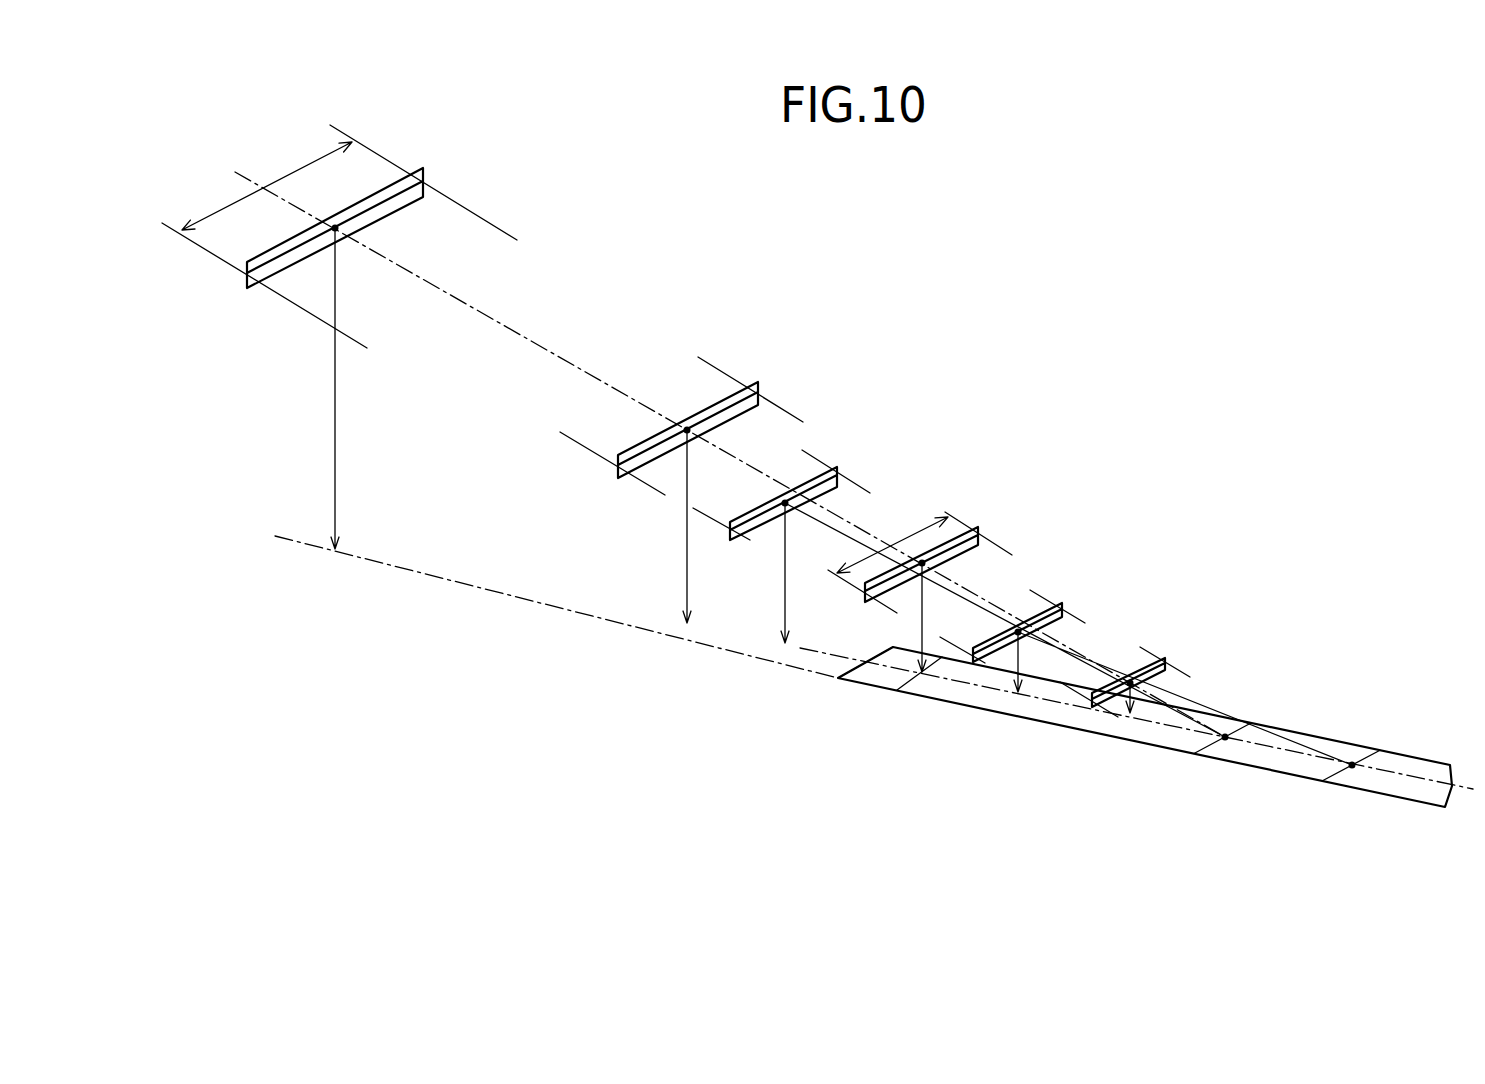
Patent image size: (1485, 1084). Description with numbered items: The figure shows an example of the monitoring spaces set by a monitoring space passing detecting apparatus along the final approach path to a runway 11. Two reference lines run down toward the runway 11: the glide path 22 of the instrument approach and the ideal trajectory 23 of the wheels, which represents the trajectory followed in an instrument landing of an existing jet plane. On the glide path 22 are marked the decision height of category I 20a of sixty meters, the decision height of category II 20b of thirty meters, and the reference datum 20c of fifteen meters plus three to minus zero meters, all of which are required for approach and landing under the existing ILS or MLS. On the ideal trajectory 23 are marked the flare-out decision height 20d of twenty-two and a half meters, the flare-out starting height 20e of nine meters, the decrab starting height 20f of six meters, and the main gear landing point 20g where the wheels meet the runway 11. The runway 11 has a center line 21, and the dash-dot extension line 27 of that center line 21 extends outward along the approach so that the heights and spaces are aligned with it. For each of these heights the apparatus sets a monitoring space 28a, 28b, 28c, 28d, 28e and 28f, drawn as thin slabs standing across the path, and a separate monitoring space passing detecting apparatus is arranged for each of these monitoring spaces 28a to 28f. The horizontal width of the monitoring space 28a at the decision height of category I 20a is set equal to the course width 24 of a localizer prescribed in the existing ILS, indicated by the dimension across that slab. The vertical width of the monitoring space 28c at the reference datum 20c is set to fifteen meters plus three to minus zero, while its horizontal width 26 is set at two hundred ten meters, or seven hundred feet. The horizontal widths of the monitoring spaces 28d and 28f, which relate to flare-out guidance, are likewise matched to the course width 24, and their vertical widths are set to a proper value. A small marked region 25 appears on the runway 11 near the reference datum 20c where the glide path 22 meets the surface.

The runway 11 is at (1068, 728).
The decision height of category I 20a is at (335, 385).
The decision height of category II 20b is at (687, 542).
The reference datum 20c is at (922, 628).
The flare-out decision height 20d is at (784, 582).
The flare-out starting height 20e is at (1015, 664).
The decrab starting height 20f is at (1133, 700).
The main gear landing point 20g is at (1352, 768).
The center line 21 is at (1280, 750).
The glide path 22 is at (545, 345).
The ideal trajectory of the wheels 23 is at (822, 527).
The course width 24 is at (297, 170).
The mounting region 25 is at (897, 692).
The horizontal width of the monitoring space 26 is at (915, 532).
The extension line of the center line 27 is at (497, 585).
The monitoring space 28a is at (423, 178).
The monitoring space 28b is at (760, 390).
The monitoring space 28c is at (980, 535).
The monitoring space 28d is at (837, 470).
The monitoring space 28e is at (1063, 608).
The monitoring space 28f is at (1165, 662).